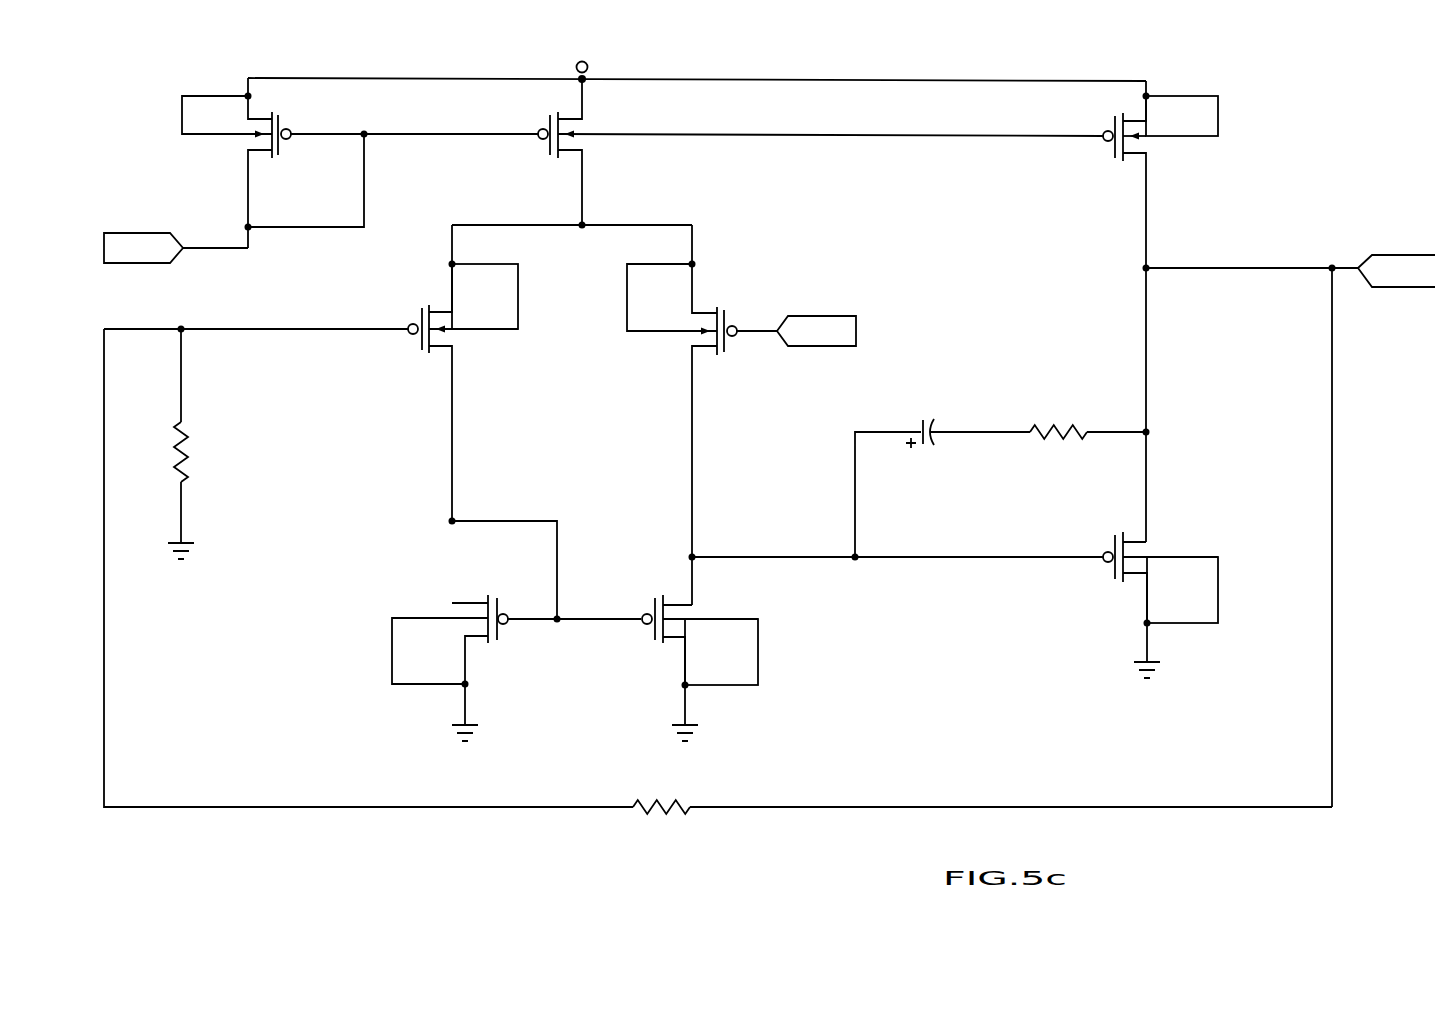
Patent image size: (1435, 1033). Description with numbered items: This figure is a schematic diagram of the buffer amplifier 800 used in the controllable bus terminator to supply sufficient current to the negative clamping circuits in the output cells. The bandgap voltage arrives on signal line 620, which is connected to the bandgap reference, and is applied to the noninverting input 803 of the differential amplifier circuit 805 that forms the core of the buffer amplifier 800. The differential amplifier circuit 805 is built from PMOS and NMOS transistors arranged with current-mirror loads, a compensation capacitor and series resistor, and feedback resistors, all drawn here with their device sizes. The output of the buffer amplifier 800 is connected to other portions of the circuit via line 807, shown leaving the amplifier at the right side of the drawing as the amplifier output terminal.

The buffer amplifier 800 is at (769, 466).
The noninverting input 803 is at (757, 327).
The differential amplifier circuit 805 is at (676, 218).
The line 807 is at (1413, 253).
The signal line 620 is at (857, 330).